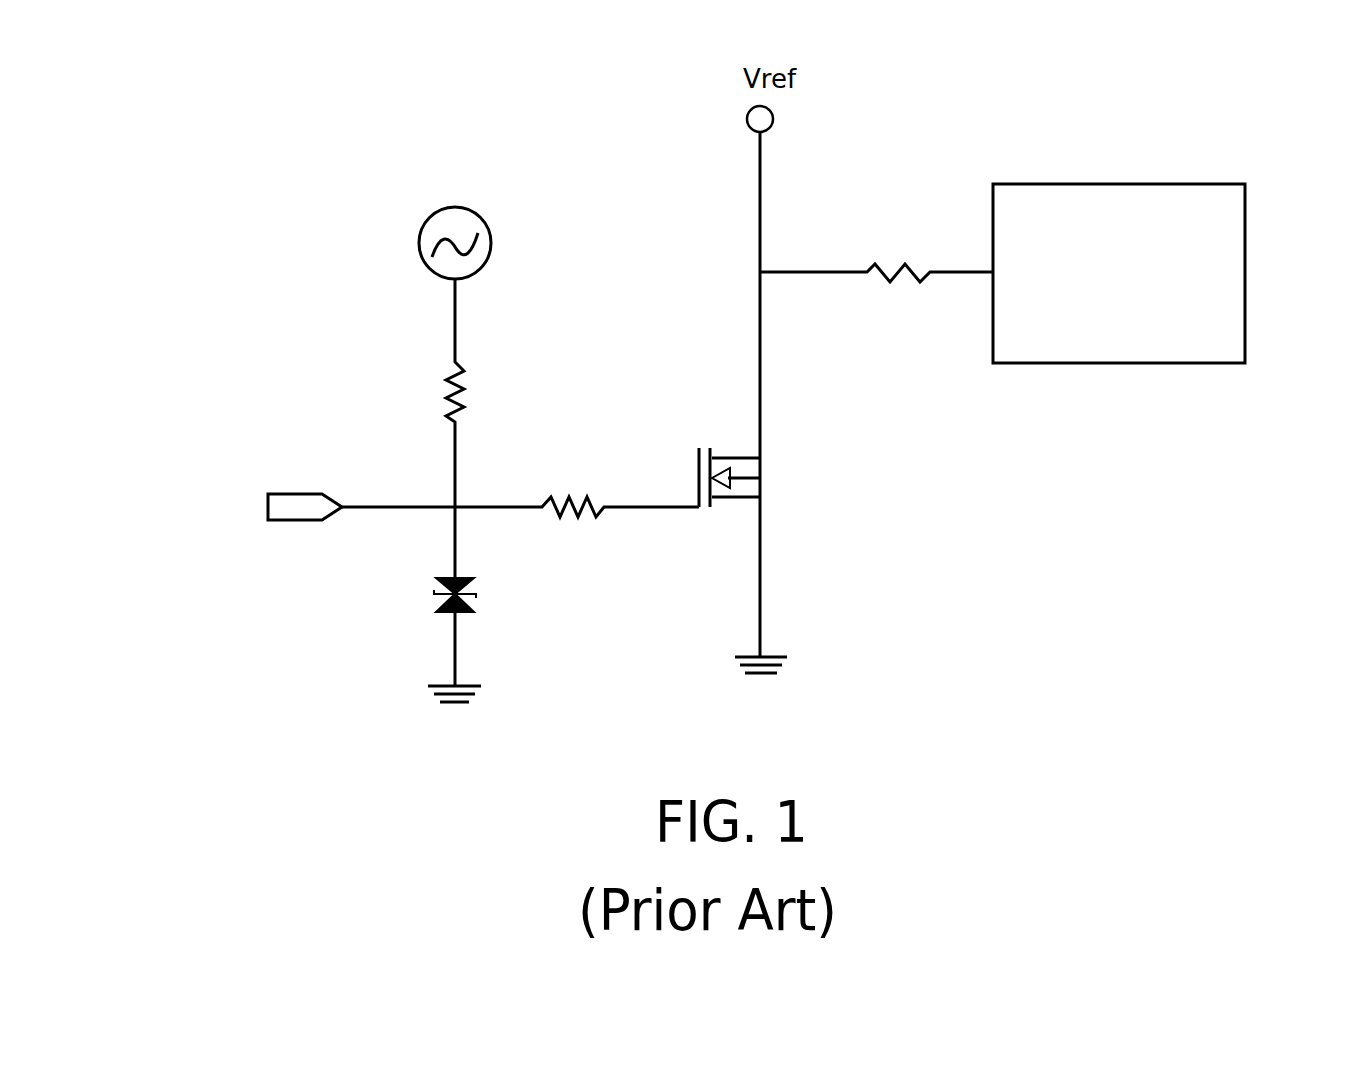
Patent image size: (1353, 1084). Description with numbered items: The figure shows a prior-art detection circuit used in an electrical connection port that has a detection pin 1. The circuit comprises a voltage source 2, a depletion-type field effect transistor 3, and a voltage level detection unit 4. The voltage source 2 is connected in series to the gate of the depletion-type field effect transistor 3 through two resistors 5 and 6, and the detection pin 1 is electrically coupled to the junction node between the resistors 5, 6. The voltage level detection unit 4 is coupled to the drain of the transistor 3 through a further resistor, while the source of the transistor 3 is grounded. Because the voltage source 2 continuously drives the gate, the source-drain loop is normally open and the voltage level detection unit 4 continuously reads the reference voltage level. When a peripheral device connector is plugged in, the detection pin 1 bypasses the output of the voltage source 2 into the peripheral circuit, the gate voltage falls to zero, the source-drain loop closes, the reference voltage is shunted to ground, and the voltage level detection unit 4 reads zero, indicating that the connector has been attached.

The detection pin 1 is at (294, 494).
The voltage source 2 is at (445, 182).
The depletion-type field effect transistor 3 is at (703, 410).
The voltage level detection unit 4 is at (1109, 333).
The resistor 5 is at (468, 394).
The resistor 6 is at (572, 497).